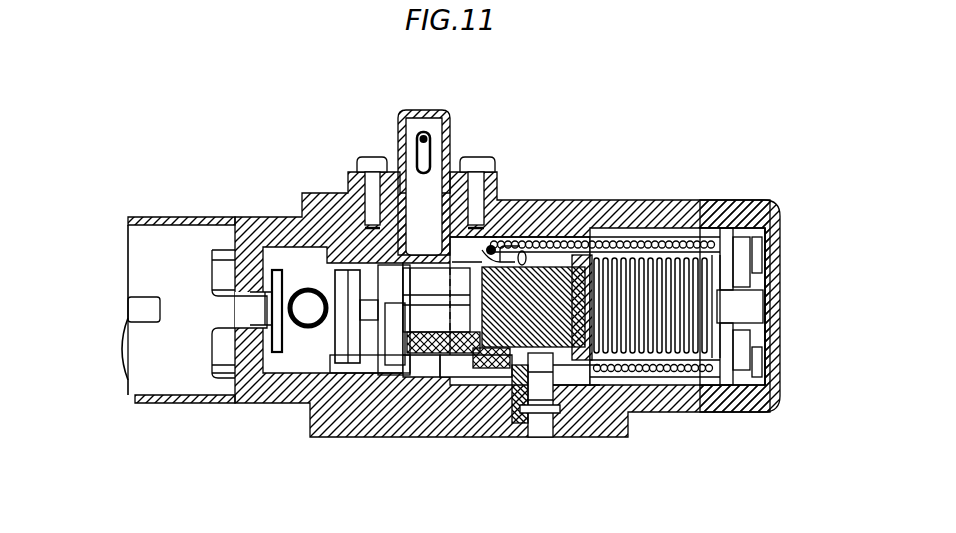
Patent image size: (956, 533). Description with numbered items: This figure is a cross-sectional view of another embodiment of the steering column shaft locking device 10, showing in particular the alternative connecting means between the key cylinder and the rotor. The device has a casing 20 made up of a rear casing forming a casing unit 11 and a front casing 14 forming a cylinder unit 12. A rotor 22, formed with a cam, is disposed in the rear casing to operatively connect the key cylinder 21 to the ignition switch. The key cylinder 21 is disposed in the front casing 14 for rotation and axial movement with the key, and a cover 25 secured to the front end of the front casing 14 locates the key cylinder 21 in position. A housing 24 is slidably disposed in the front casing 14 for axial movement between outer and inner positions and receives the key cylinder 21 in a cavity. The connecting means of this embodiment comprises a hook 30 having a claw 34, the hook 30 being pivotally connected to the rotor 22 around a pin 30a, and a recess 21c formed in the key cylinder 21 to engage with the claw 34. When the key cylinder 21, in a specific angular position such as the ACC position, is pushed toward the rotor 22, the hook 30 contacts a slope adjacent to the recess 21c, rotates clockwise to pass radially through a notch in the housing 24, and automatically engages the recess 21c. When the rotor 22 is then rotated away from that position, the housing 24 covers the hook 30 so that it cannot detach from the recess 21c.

The steering column shaft locking device 10 is at (340, 112).
The casing unit 11 is at (338, 178).
The cylinder unit 12 is at (728, 186).
The front casing 14 is at (555, 440).
The casing 20 is at (250, 214).
The key cylinder 21 is at (618, 240).
The recess 21c is at (596, 212).
The rotor 22 is at (431, 437).
The housing 24 is at (676, 236).
The cover 25 is at (778, 234).
The hook 30 is at (505, 234).
The pin 30a is at (492, 248).
The claw 34 is at (562, 238).